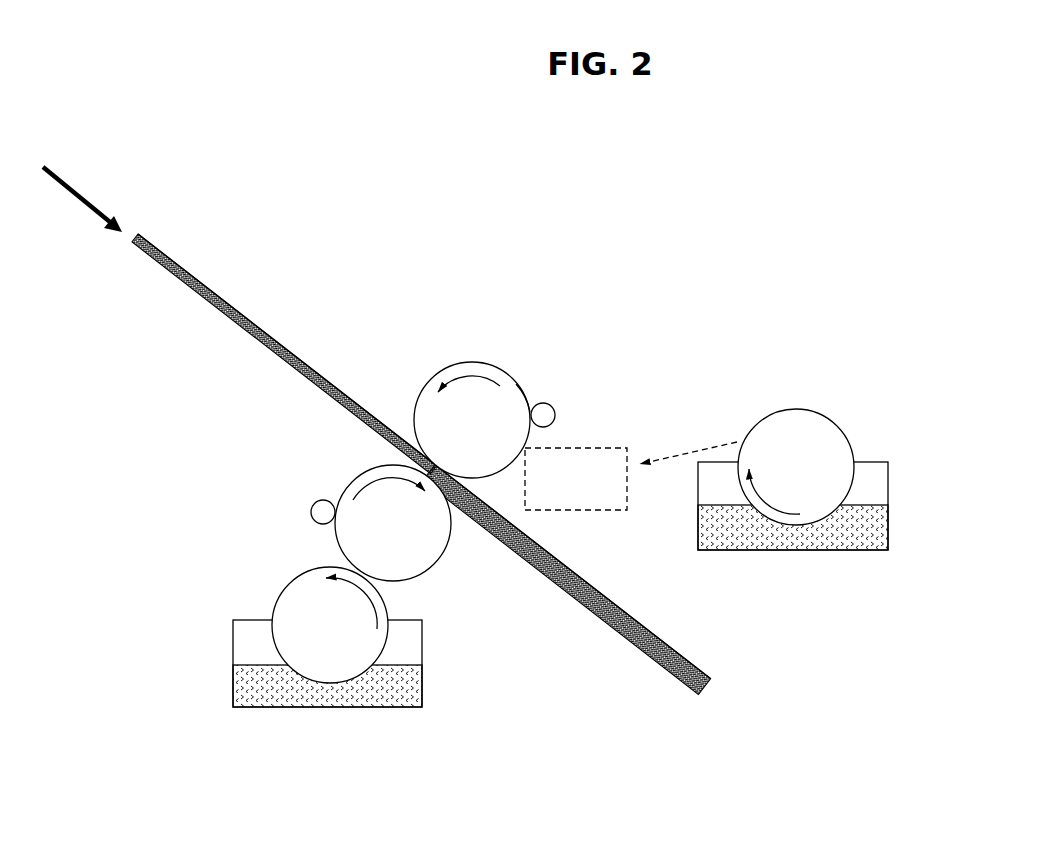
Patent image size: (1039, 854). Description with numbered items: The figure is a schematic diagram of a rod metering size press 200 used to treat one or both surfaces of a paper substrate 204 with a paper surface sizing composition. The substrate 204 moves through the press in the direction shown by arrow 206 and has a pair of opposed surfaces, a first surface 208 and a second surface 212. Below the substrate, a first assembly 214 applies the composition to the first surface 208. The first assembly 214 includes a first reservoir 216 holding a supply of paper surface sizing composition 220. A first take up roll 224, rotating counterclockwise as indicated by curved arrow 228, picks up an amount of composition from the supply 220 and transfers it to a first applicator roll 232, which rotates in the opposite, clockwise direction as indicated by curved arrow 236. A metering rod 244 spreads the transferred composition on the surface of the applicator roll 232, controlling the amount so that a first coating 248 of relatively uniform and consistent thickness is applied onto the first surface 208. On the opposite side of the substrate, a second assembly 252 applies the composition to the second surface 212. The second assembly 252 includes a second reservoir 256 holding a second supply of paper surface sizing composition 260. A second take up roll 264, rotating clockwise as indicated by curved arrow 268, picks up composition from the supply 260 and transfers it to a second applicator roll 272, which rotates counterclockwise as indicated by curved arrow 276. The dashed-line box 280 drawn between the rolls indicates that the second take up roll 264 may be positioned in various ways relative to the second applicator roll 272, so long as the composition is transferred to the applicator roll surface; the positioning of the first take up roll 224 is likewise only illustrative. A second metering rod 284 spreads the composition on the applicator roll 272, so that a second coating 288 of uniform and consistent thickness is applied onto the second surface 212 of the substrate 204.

The rod metering size press 200 is at (420, 218).
The paper substrate 204 is at (354, 371).
The arrow 206 is at (90, 203).
The first surface 208 is at (200, 300).
The second surface 212 is at (263, 335).
The first assembly 214 is at (186, 572).
The first reservoir 216 is at (228, 665).
The supply of paper surface sizing composition 220 is at (350, 714).
The first take up roll 224 is at (290, 570).
The curved arrow 228 is at (375, 600).
The first applicator roll 232 is at (341, 485).
The curved arrow 236 is at (348, 468).
The metering rod 244 is at (304, 499).
The first coating 248 is at (548, 580).
The second assembly 252 is at (713, 327).
The second reservoir 256 is at (906, 476).
The second supply of paper surface sizing composition 260 is at (843, 562).
The second take up roll 264 is at (823, 398).
The curved arrow 268 is at (757, 505).
The second applicator roll 272 is at (524, 376).
The curved arrow 276 is at (471, 379).
The dryer region 280 is at (610, 436).
The second metering rod 284 is at (560, 400).
The second coating 288 is at (594, 576).